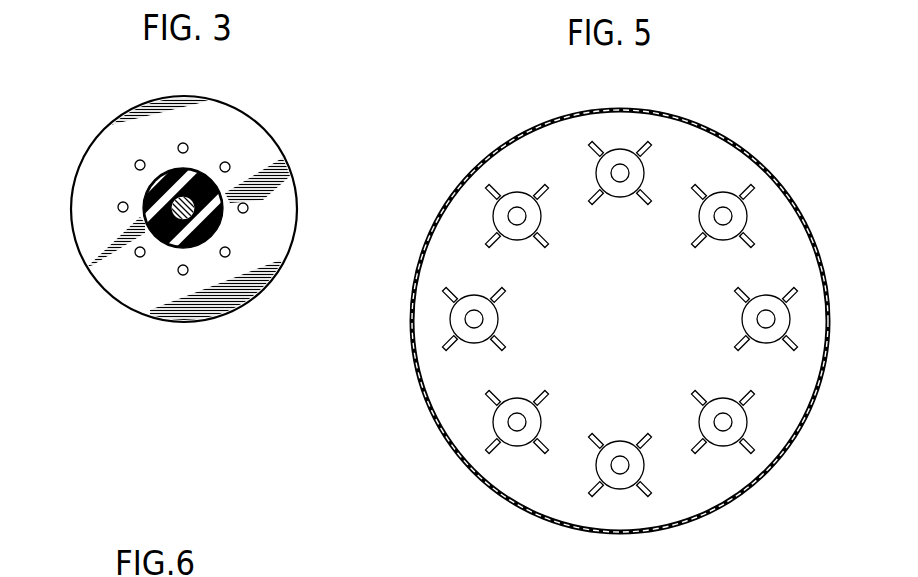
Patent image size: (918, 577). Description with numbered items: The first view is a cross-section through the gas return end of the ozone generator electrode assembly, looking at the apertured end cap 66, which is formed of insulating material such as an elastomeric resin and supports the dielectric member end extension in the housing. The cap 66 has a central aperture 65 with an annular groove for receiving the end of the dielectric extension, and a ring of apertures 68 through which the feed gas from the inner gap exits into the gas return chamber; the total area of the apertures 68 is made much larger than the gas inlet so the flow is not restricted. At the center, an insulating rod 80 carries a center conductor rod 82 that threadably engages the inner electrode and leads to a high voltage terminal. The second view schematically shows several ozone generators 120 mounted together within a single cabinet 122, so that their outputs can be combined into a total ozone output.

In FIG. 3, the apertured end cap 66 is at (237, 120).
In FIG. 3, the apertures 68 is at (136, 165).
In FIG. 3, the aperture 65 is at (222, 193).
In FIG. 3, the center conductor rod 82 is at (144, 183).
In FIG. 3, the insulating rod 80 is at (173, 246).
In FIG. 5, the cabinet 122 is at (607, 108).
In FIG. 5, the ozone generators 120 is at (544, 226).